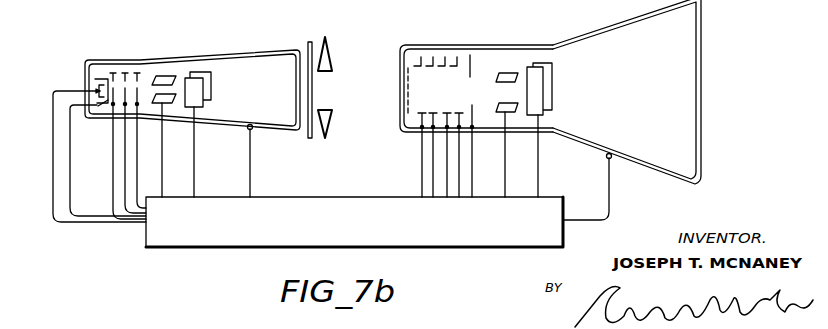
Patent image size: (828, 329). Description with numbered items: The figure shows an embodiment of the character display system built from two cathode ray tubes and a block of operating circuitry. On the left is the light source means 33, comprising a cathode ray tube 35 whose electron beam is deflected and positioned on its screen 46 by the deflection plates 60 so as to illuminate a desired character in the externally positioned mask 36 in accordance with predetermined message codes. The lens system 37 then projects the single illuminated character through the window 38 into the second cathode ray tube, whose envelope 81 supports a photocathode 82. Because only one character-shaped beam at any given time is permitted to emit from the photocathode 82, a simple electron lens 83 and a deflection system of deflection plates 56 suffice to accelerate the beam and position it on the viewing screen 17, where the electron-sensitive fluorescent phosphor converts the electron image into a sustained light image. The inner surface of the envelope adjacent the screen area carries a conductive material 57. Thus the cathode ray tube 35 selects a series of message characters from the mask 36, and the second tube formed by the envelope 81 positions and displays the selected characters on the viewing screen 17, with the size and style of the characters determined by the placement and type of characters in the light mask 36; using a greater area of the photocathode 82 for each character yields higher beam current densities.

The viewing screen 17 is at (693, 74).
The light source means 33 is at (287, 184).
The cathode ray tube 35 is at (97, 60).
The mask 36 is at (307, 42).
The lens system 37 is at (332, 54).
The window 38 is at (400, 112).
The screen 46 is at (294, 132).
The deflection plates 56 is at (518, 71).
The conductive material 57 is at (660, 170).
The deflection plates 60 is at (177, 77).
The envelope 81 is at (487, 46).
The photocathode 82 is at (409, 82).
The electron lens 83 is at (451, 57).